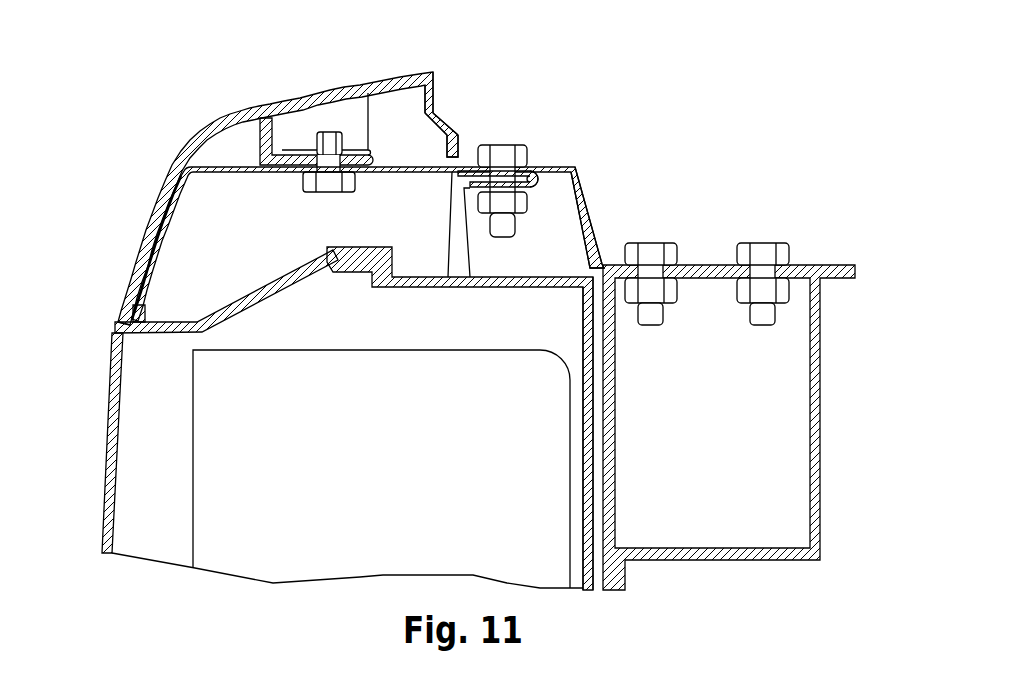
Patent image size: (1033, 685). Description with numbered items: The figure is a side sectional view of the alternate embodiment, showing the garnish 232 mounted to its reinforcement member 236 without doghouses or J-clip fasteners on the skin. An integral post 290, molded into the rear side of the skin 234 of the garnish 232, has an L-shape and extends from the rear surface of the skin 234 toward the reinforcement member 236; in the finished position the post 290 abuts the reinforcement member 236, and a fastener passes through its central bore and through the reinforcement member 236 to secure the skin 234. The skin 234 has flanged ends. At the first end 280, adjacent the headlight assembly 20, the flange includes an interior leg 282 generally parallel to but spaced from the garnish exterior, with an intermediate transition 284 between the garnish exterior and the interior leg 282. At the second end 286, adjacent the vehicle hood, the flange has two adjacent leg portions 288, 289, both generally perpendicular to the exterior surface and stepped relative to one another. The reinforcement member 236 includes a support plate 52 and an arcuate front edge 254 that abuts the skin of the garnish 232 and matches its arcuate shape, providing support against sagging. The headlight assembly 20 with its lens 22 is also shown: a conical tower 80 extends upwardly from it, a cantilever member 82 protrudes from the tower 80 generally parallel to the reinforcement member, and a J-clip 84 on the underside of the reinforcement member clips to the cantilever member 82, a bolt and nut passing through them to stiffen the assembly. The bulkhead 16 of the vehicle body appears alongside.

The garnish 232 is at (213, 105).
The second end 286 is at (433, 73).
The leg portion 288 is at (441, 108).
The leg portion 289 is at (459, 138).
The integral post 290 is at (259, 136).
The skin 234 is at (153, 186).
The front edge 254 is at (157, 232).
The reinforcement member 236 is at (546, 166).
The first end 280 is at (122, 321).
The interior leg 282 is at (143, 313).
The intermediate transition 284 is at (124, 334).
The lens 22 is at (106, 527).
The tower 80 is at (450, 250).
The headlight assembly 20 is at (588, 591).
The bulkhead 16 is at (608, 592).
The support plate 52 is at (479, 147).
The cantilever member 82 is at (484, 181).
The J-clip 84 is at (539, 184).